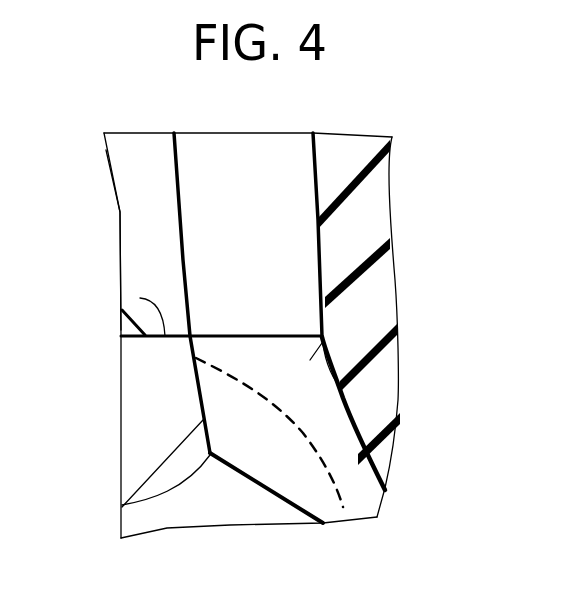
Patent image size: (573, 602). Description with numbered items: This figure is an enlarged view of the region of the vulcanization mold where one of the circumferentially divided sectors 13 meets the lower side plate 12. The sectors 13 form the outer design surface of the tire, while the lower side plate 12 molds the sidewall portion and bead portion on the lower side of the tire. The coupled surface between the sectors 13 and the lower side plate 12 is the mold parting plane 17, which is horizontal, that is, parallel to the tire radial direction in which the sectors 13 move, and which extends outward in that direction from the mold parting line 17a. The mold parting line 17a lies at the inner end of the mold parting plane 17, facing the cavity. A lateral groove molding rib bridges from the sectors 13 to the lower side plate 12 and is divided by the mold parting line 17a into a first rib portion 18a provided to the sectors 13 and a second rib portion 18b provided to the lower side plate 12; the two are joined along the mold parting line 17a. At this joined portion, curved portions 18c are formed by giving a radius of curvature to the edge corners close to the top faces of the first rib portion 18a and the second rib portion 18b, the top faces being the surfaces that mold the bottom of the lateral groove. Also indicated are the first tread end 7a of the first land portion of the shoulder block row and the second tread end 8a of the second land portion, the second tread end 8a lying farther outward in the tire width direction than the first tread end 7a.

The sector 13 is at (143, 212).
The mold parting plane 17 is at (140, 298).
The first tread end 7a is at (192, 362).
The lower side plate 12 is at (165, 443).
The second tread end 8a is at (122, 507).
The first rib portion 18a is at (317, 186).
The second rib portion 18b is at (347, 423).
The curved portion 18c is at (323, 333).
The mold parting line 17a is at (342, 400).